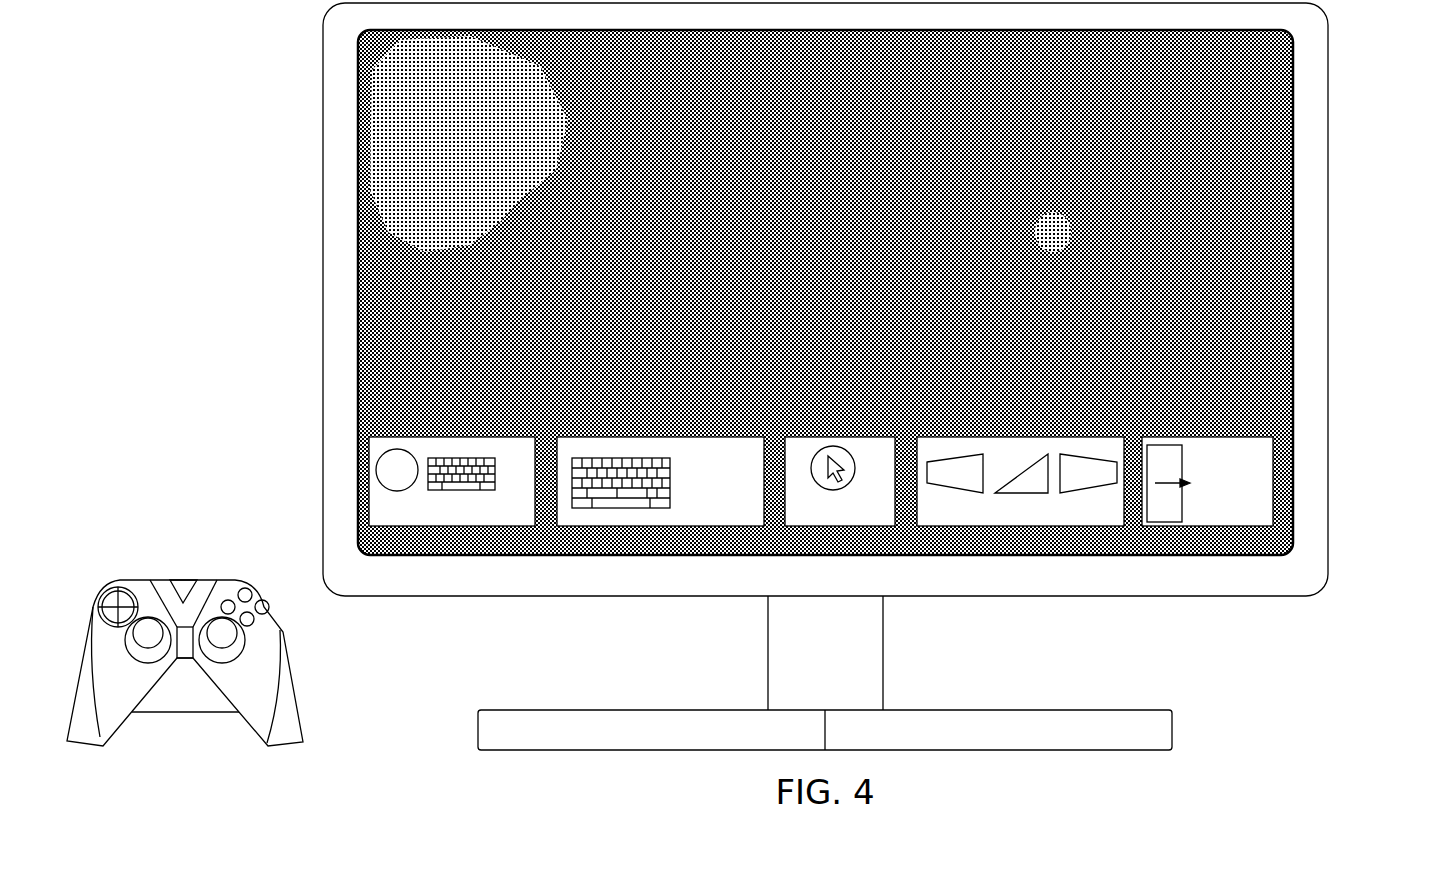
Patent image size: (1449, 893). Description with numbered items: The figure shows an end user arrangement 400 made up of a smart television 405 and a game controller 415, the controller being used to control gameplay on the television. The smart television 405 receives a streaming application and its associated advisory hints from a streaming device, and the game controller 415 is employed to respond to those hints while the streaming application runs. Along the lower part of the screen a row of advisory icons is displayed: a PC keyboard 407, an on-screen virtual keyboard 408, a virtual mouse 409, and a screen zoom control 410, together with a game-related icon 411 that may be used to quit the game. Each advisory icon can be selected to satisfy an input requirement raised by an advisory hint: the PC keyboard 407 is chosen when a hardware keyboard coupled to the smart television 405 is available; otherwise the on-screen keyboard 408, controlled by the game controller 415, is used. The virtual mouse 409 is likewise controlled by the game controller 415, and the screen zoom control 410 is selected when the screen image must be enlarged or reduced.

The end user arrangement 400 is at (1392, 126).
The smart television 405 is at (322, 294).
The PC keyboard 407 is at (452, 436).
The on-screen keyboard 408 is at (659, 436).
The virtual mouse 409 is at (836, 436).
The screen zoom control 410 is at (1020, 436).
The game-related icon 411 is at (1208, 436).
The game controller 415 is at (182, 714).